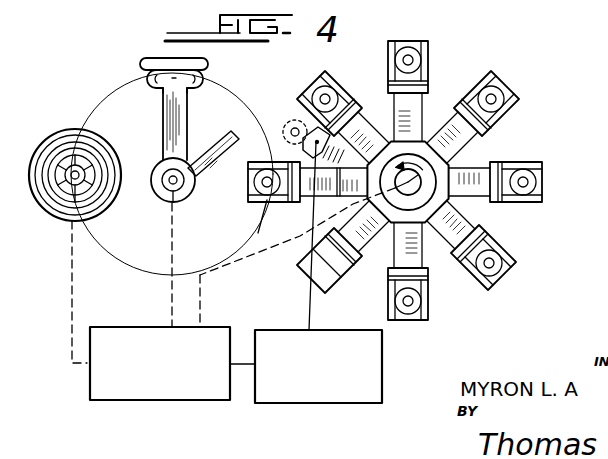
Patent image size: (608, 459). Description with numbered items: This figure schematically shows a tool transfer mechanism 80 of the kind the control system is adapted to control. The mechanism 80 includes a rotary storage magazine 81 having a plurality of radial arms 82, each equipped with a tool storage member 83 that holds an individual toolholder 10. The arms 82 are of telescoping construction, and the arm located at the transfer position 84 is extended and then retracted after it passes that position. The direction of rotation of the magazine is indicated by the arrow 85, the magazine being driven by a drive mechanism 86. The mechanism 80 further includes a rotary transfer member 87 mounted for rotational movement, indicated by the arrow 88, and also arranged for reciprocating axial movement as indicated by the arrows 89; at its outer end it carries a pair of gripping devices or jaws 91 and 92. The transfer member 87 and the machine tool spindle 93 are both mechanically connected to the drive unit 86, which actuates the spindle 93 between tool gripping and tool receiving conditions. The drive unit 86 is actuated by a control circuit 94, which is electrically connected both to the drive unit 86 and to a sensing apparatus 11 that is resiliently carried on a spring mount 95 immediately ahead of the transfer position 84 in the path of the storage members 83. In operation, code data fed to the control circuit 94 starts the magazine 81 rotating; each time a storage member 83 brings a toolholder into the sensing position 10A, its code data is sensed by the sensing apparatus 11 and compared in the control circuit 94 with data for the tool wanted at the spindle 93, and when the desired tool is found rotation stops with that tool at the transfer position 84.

The toolholder 10 is at (410, 62).
The sensing position of the toolholder 10A is at (285, 120).
The sensing apparatus 11 is at (296, 126).
The tool transfer mechanism 80 is at (534, 113).
The rotary storage magazine 81 is at (444, 167).
The radial arm 82 is at (478, 197).
The tool storage member 83 is at (543, 185).
The transfer position 84 is at (282, 208).
The arrow indicating direction of rotation 85 is at (414, 163).
The drive mechanism 86 is at (196, 398).
The rotary transfer member 87 is at (175, 125).
The arrow indicating rotational movement 88 is at (183, 116).
The arrows indicating reciprocating axial movement 89 is at (248, 130).
The gripping device or jaw 91 is at (152, 73).
The gripping device or jaw 92 is at (196, 78).
The spindle 93 is at (57, 193).
The control circuit 94 is at (309, 403).
The spring mount 95 is at (336, 156).